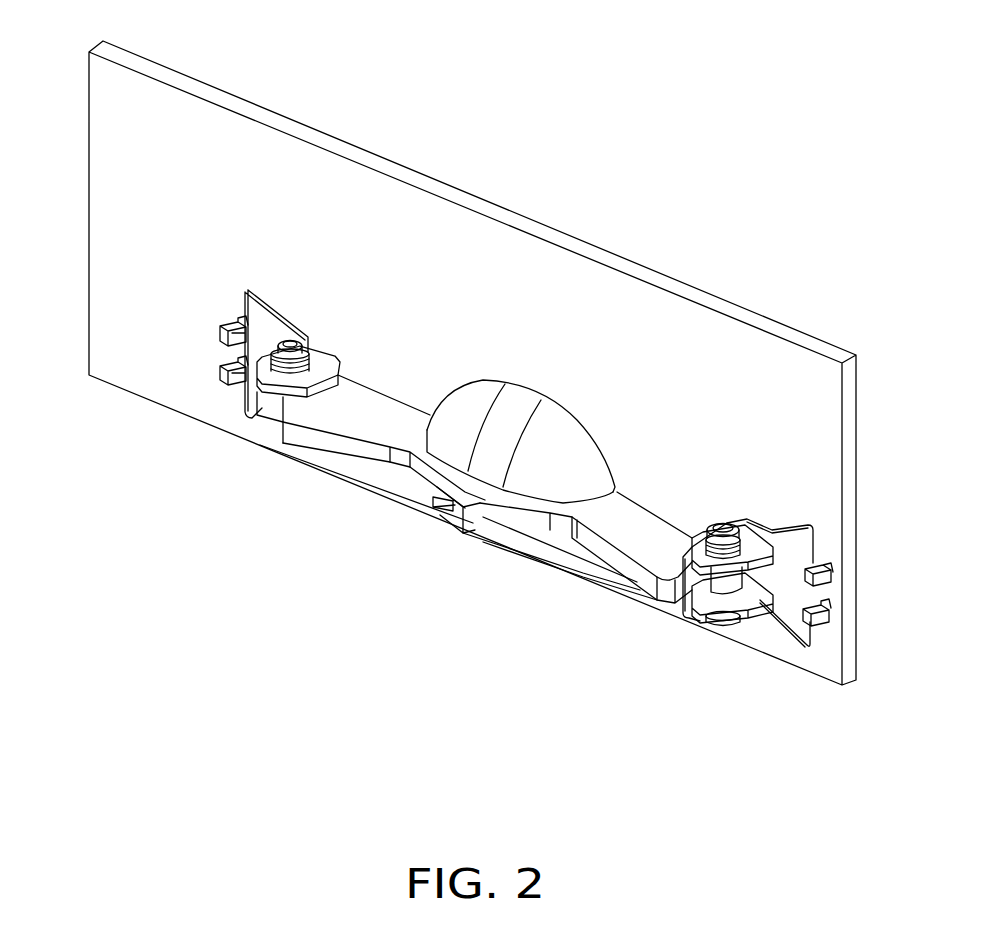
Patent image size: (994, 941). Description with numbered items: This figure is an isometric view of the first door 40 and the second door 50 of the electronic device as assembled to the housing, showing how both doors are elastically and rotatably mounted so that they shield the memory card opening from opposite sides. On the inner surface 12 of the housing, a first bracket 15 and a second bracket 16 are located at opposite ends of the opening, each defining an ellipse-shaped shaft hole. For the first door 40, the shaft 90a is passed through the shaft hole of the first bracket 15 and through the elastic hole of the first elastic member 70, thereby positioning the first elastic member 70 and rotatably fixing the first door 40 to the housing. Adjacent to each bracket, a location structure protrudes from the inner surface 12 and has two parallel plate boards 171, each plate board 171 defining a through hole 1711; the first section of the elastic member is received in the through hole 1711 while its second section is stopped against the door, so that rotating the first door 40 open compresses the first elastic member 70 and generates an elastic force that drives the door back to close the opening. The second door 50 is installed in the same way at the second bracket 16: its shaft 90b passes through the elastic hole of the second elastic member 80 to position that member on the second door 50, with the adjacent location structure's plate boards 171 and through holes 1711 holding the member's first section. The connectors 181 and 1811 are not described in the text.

The inner surface 12 is at (380, 208).
The first bracket 15 is at (693, 612).
The second bracket 16 is at (300, 388).
The first door 40 is at (565, 545).
The second door 50 is at (375, 465).
The first elastic member 70 is at (690, 548).
The second elastic member 80 is at (277, 372).
The shaft 90a is at (733, 522).
The shaft 90b is at (290, 340).
The plate board 171 is at (805, 615).
The through hole 1711 is at (829, 621).
The first connector 181 is at (220, 331).
The first terminal 1811 is at (232, 380).